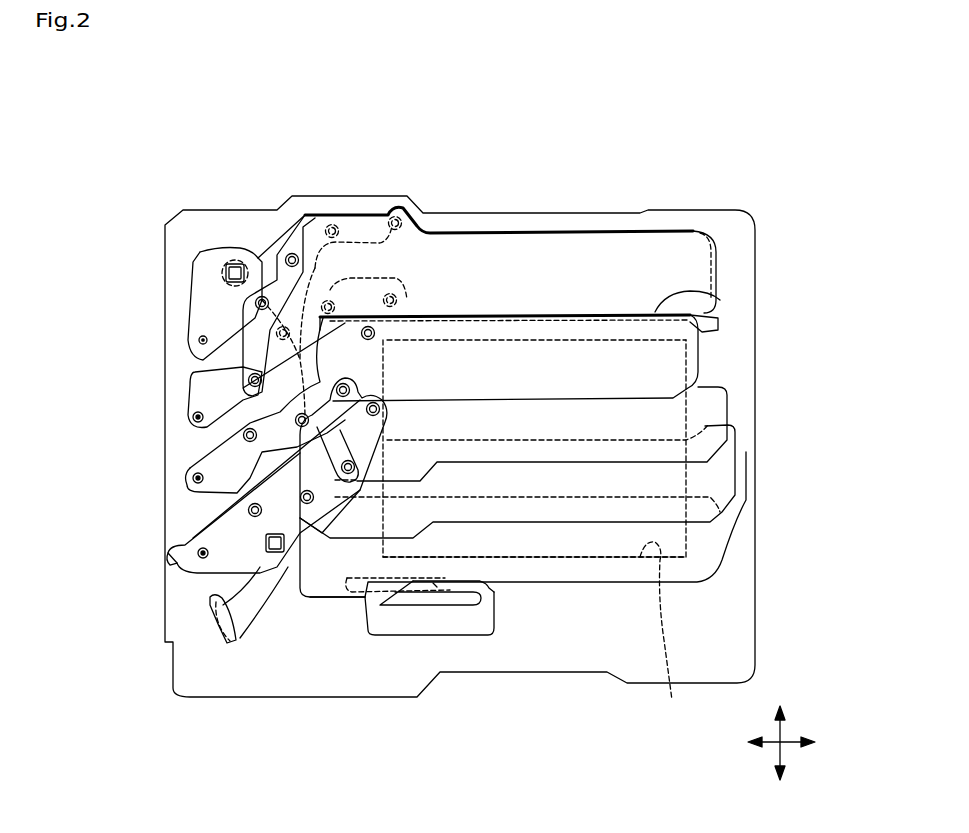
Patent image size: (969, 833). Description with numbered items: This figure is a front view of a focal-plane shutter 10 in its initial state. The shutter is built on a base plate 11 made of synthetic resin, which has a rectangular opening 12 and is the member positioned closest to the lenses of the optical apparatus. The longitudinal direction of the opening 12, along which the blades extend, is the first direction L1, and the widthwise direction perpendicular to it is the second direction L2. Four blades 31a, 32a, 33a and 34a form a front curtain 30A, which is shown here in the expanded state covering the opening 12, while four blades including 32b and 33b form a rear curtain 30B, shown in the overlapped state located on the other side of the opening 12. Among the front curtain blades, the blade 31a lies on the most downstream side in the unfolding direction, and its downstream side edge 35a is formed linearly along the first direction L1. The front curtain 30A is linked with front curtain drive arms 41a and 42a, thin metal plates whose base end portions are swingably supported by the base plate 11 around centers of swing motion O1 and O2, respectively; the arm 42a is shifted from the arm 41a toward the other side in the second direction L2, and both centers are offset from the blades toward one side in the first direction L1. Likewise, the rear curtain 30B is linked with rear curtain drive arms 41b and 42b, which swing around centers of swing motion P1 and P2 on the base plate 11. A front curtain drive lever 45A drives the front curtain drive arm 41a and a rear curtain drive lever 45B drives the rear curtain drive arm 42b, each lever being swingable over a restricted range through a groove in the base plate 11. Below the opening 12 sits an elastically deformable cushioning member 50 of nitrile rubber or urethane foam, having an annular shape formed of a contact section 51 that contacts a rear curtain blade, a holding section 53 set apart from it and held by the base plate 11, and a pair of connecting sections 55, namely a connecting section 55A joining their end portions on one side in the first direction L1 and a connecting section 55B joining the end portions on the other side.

The focal-plane shutter 10 is at (163, 132).
The base plate 11 is at (232, 230).
The opening 12 is at (536, 536).
The front curtain 30A is at (581, 456).
The rear curtain 30B is at (529, 354).
The blade 31a is at (700, 352).
The blade 32a is at (728, 412).
The blade 33a is at (737, 475).
The blade 34a is at (554, 524).
The blade 32b is at (547, 432).
The blade 33b is at (527, 496).
The side edge 35a is at (720, 298).
The front curtain drive arm 41a is at (215, 542).
The rear curtain drive arm 41b is at (200, 393).
The front curtain drive arm 42a is at (215, 460).
The rear curtain drive arm 42b is at (200, 300).
The front curtain drive lever 45A is at (270, 545).
The rear curtain drive lever 45B is at (228, 270).
The cushioning member 50 is at (406, 636).
The contact section 51 is at (437, 583).
The holding section 53 is at (387, 627).
The connecting sections 55 is at (417, 672).
The connecting section 55A is at (367, 598).
The connecting section 55B is at (494, 592).
The center of swing motion O1 is at (197, 553).
The center of swing motion O2 is at (192, 478).
The center of swing motion P1 is at (192, 417).
The center of swing motion P2 is at (198, 340).
The first direction L1 is at (790, 745).
The second direction L2 is at (783, 728).